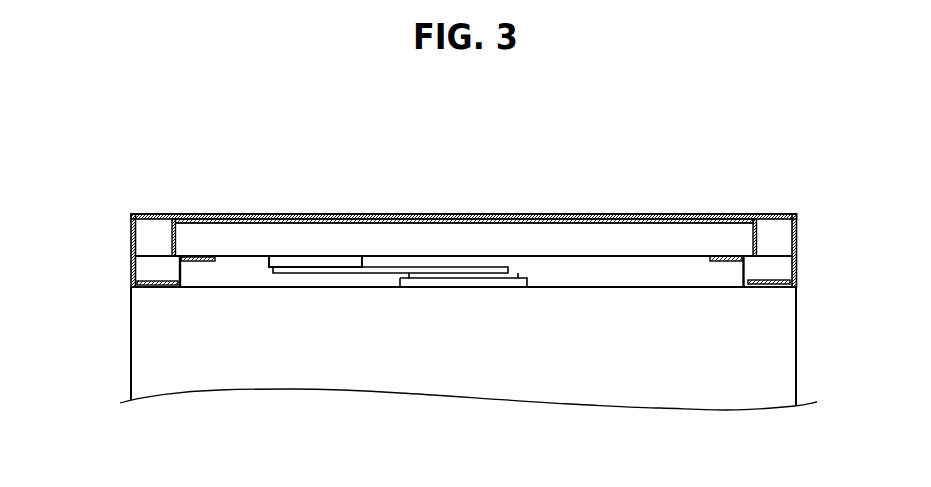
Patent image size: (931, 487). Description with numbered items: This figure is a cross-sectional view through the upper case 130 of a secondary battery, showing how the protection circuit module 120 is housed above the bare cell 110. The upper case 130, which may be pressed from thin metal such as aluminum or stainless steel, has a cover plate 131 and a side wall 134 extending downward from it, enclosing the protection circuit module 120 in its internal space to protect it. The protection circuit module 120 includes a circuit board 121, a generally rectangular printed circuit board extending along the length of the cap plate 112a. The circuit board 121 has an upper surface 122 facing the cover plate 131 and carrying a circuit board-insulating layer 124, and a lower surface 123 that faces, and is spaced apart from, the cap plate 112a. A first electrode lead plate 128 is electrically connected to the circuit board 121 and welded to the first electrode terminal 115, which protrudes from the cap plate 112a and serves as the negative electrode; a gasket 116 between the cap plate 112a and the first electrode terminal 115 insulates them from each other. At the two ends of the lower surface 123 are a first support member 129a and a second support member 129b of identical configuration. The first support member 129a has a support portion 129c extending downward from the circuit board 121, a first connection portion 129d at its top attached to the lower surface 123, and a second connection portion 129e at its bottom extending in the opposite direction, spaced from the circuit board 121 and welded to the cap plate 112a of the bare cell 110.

The bare cell 110 is at (131, 340).
The cap plate 112a is at (663, 283).
The first electrode terminal 115 is at (518, 276).
The gasket 116 is at (452, 287).
The protection circuit module 120 is at (263, 232).
The circuit board 121 is at (464, 233).
The upper surface 122 is at (535, 221).
The lower surface 123 is at (683, 257).
The circuit board-insulating layer 124 is at (338, 217).
The first electrode lead plate 128 is at (382, 273).
The first support member 129a is at (171, 256).
The second support member 129b is at (746, 268).
The support portion 129c is at (178, 268).
The first connection portion 129d is at (200, 258).
The second connection portion 129e is at (158, 285).
The upper case 130 is at (131, 214).
The cover plate 131 is at (397, 216).
The side wall 134 is at (797, 233).